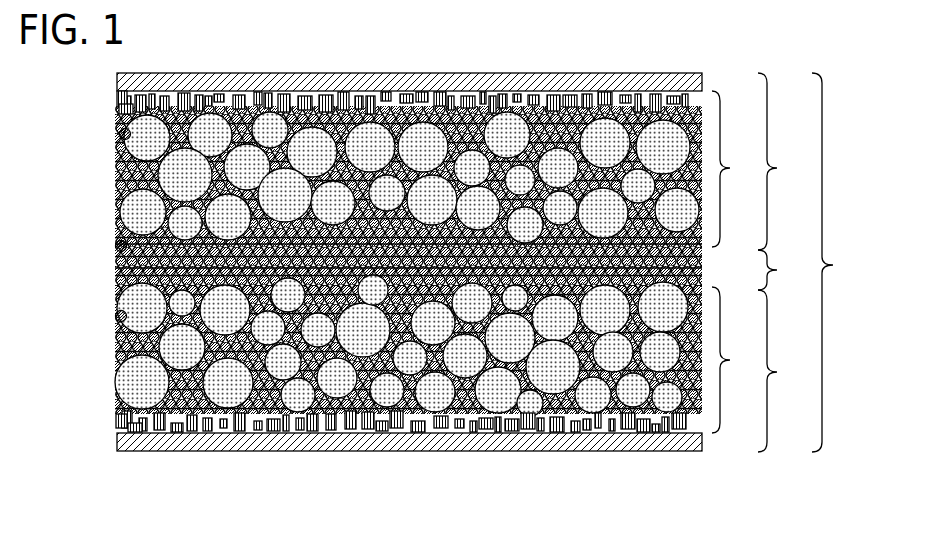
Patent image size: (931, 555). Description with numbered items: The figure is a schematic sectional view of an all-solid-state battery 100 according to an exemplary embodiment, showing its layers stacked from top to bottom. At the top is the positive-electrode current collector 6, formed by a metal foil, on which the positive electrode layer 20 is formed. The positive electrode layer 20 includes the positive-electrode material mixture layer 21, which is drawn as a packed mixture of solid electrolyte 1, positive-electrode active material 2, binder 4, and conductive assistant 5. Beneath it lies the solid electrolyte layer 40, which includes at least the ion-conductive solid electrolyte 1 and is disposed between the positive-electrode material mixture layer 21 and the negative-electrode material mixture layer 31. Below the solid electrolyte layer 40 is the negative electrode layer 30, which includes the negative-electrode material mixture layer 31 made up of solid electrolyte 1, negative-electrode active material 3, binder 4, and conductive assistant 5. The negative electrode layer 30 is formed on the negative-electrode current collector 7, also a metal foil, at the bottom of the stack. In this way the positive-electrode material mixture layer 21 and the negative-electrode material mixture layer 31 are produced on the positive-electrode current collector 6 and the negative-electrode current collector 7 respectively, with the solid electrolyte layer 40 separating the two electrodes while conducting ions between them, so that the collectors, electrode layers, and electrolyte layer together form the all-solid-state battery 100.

The solid electrolyte 1 is at (120, 132).
The positive-electrode active material 2 is at (138, 213).
The negative-electrode active material 3 is at (135, 384).
The binder 4 is at (119, 112).
The conductive assistant 5 is at (117, 95).
The positive-electrode current collector 6 is at (702, 80).
The negative-electrode current collector 7 is at (702, 447).
The positive electrode layer 20 is at (432, 160).
The positive-electrode material mixture layer 21 is at (408, 169).
The negative electrode layer 30 is at (432, 368).
The negative-electrode material mixture layer 31 is at (408, 354).
The solid electrolyte layer 40 is at (464, 266).
The all-solid-state battery 100 is at (468, 266).